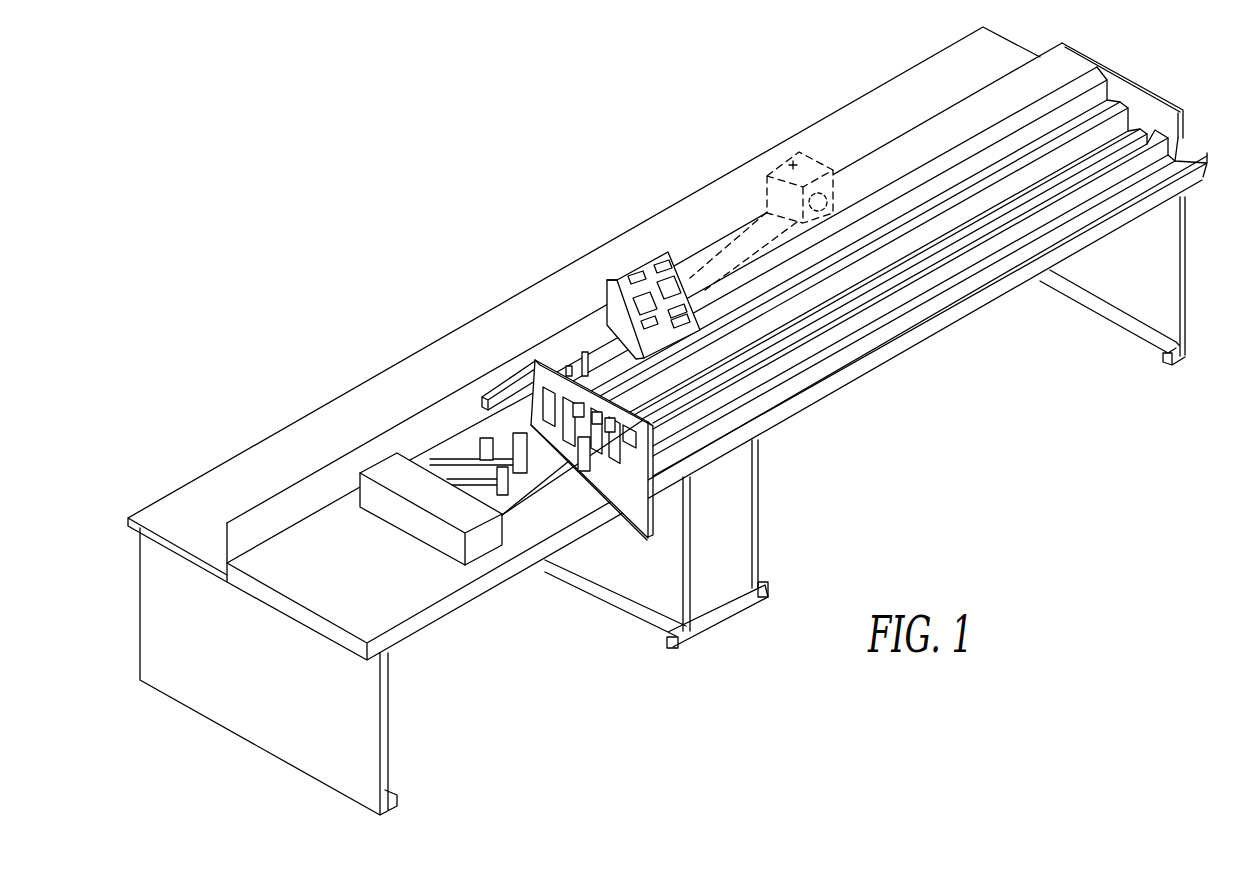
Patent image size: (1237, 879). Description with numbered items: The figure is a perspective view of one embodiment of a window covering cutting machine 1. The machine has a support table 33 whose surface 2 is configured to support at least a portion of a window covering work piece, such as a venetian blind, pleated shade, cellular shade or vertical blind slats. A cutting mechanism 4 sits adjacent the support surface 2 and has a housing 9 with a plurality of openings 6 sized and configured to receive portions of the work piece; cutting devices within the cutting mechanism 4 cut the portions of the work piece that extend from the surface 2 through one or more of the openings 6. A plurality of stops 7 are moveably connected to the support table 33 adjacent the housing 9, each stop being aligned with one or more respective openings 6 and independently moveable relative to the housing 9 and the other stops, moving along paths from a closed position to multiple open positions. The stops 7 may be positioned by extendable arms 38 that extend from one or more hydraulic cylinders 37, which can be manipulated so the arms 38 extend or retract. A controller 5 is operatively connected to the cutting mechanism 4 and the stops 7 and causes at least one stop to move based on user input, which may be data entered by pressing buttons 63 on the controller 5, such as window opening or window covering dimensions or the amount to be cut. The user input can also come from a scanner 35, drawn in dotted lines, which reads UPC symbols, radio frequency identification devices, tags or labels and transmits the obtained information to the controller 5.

The window covering cutting machine 1 is at (659, 189).
The surface 2 is at (867, 328).
The cutting mechanism 4 is at (513, 375).
The controller 5 is at (627, 280).
The openings 6 is at (617, 448).
The stops 7 is at (533, 508).
The housing 9 is at (640, 470).
The support table 33 is at (917, 158).
The scanner 35 is at (783, 150).
The hydraulic cylinders 37 is at (415, 523).
The extendable arms 38 is at (462, 468).
The buttons 63 is at (646, 310).